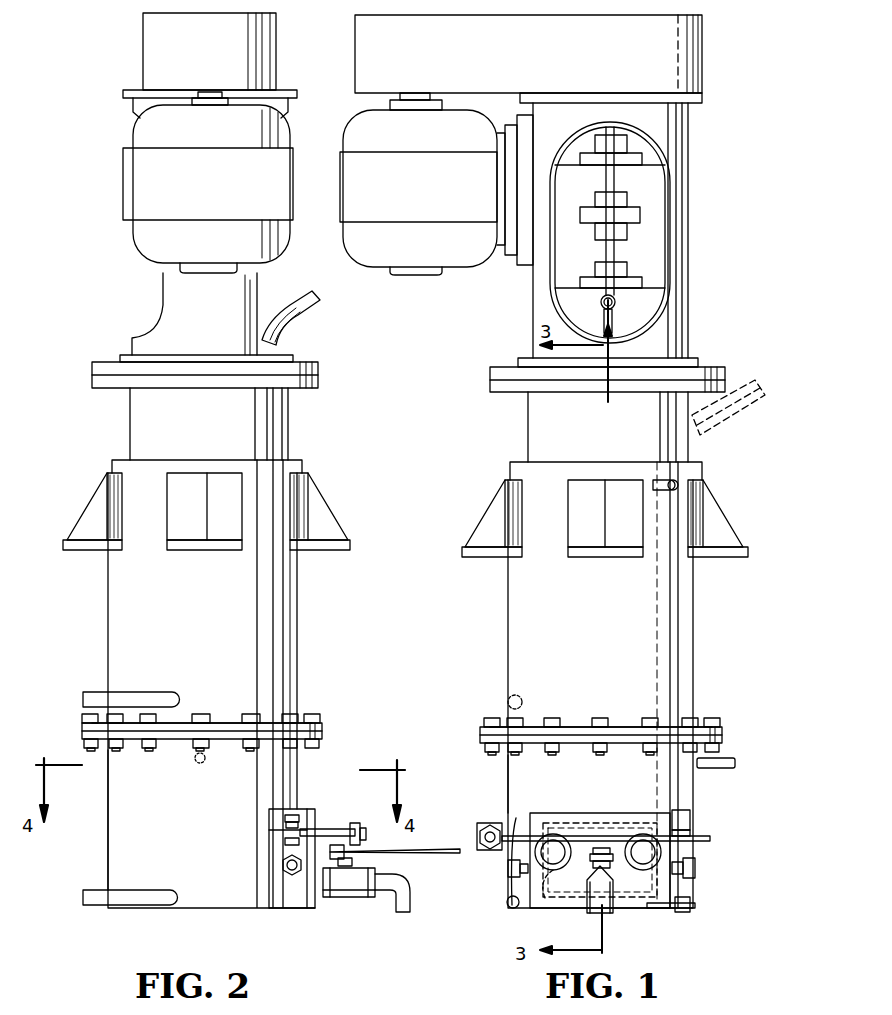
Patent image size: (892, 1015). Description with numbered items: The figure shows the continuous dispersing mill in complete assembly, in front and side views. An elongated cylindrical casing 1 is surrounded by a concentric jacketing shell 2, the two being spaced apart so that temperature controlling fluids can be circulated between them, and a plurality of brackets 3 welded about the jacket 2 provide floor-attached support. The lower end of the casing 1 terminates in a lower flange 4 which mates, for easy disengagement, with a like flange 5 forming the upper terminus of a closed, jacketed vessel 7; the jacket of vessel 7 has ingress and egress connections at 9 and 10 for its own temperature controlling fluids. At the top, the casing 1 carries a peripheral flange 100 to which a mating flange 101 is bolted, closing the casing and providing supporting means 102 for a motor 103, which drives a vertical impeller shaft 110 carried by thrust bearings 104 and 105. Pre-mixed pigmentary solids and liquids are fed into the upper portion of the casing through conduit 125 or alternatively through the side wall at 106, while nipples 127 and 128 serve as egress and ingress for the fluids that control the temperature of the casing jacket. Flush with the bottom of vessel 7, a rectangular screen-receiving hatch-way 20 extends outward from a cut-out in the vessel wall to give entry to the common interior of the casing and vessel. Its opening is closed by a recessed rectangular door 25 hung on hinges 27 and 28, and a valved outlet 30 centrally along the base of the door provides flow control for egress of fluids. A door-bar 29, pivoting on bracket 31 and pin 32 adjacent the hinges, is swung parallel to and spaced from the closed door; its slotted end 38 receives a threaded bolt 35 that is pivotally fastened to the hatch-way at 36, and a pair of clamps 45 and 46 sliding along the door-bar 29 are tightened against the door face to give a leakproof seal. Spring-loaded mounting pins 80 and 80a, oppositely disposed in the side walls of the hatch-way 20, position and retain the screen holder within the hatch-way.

In FIG. 2, the cylindrical casing 1 is at (289, 425).
In FIG. 1, the cylindrical casing 1 is at (690, 443).
In FIG. 2, the concentric shell 2 is at (299, 638).
In FIG. 1, the concentric shell 2 is at (700, 631).
In FIG. 2, the brackets 3 is at (87, 511).
In FIG. 1, the brackets 3 is at (482, 511).
In FIG. 2, the lower flange 4 is at (82, 727).
In FIG. 1, the lower flange 4 is at (723, 733).
In FIG. 2, the mating flange 5 is at (323, 736).
In FIG. 1, the mating flange 5 is at (728, 741).
In FIG. 2, the jacketed vessel 7 is at (300, 770).
In FIG. 1, the jacketed vessel 7 is at (508, 770).
In FIG. 2, the ingress and egress means 9 is at (88, 904).
In FIG. 1, the ingress and egress means 9 is at (505, 902).
In FIG. 2, the ingress and egress means 10 is at (198, 762).
In FIG. 1, the ingress and egress means 10 is at (737, 764).
In FIG. 2, the hatch-way 20 is at (290, 818).
In FIG. 1, the hatch-way 20 is at (598, 815).
In FIG. 2, the door 25 is at (290, 812).
In FIG. 1, the door 25 is at (540, 815).
In FIG. 1, the hinge 27 is at (700, 820).
In FIG. 1, the hinge 28 is at (697, 905).
In FIG. 1, the door-bar 29 is at (510, 818).
In FIG. 2, the valved outlet 30 is at (345, 900).
In FIG. 1, the valved outlet 30 is at (612, 888).
In FIG. 1, the bracket 31 is at (712, 838).
In FIG. 1, the pin 32 is at (700, 832).
In FIG. 2, the threaded bolt 35 is at (330, 822).
In FIG. 1, the threaded bolt 35 is at (490, 848).
In FIG. 2, the pivot fastening 36 is at (275, 829).
In FIG. 1, the slotted end 38 is at (490, 824).
In FIG. 1, the clamp 45 is at (545, 905).
In FIG. 1, the clamp 46 is at (655, 852).
In FIG. 2, the mounting pin 80 is at (282, 880).
In FIG. 1, the mounting pin 80 is at (507, 870).
In FIG. 1, the mounting pin 80a is at (698, 870).
In FIG. 2, the peripheral flange 100 is at (322, 380).
In FIG. 1, the peripheral flange 100 is at (728, 379).
In FIG. 2, the mating flange 101 is at (316, 366).
In FIG. 1, the mating flange 101 is at (712, 360).
In FIG. 2, the supporting means 102 is at (263, 293).
In FIG. 1, the supporting means 102 is at (694, 313).
In FIG. 2, the motor 103 is at (208, 189).
In FIG. 1, the motor 103 is at (410, 275).
In FIG. 1, the thrust bearing 104 is at (592, 160).
In FIG. 1, the thrust bearing 105 is at (594, 272).
In FIG. 1, the side wall inlet 106 is at (740, 410).
In FIG. 1, the vertical impeller shaft 110 is at (619, 185).
In FIG. 2, the conduit 125 is at (318, 313).
In FIG. 1, the conduit 125 is at (616, 306).
In FIG. 1, the nipple 127 is at (670, 480).
In FIG. 2, the nipple 128 is at (90, 690).